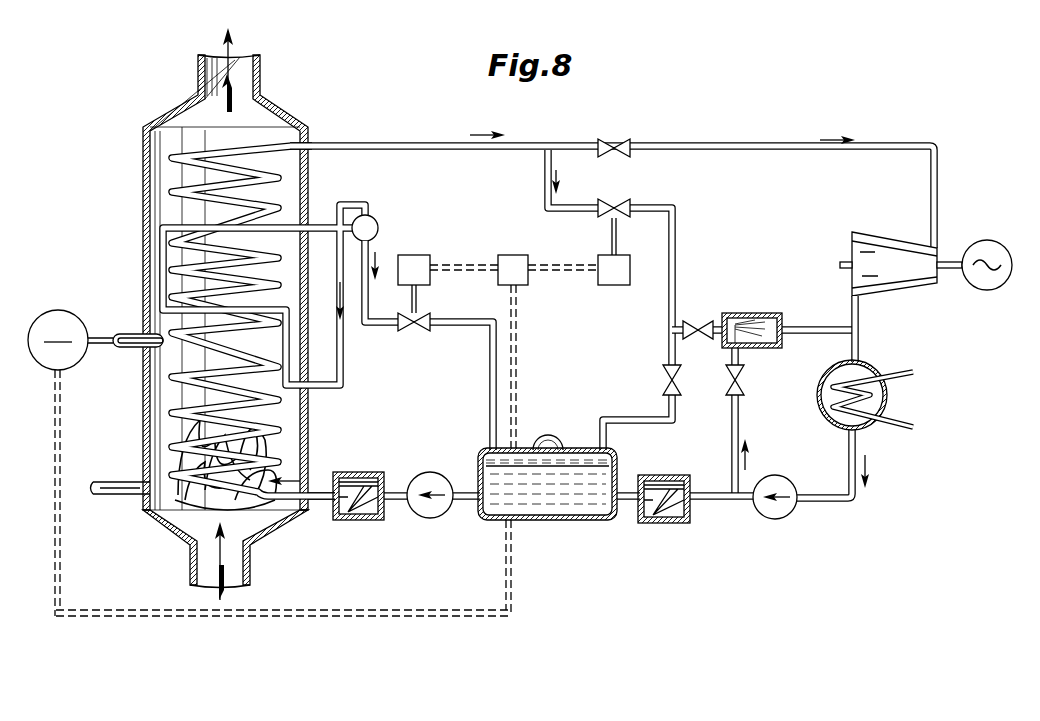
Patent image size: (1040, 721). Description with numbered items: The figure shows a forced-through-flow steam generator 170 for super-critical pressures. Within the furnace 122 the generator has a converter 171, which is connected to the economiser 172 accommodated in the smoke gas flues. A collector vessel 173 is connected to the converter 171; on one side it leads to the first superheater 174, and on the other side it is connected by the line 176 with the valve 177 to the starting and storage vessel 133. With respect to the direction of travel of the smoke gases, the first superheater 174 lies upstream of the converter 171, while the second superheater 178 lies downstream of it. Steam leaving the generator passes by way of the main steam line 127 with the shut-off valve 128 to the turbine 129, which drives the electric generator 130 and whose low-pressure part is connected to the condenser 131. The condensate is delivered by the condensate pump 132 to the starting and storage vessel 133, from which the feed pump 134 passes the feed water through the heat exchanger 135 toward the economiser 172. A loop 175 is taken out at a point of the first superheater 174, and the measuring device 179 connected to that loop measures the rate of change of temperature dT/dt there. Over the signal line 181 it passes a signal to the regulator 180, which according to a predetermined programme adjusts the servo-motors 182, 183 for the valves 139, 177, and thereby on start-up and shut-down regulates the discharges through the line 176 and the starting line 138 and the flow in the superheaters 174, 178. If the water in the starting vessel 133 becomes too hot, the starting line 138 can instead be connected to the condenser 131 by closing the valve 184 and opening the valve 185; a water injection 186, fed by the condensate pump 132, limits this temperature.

The furnace 122 is at (155, 512).
The main steam line 127 is at (432, 140).
The shut-off valve 128 is at (612, 140).
The turbine 129 is at (885, 240).
The electric generator 130 is at (990, 240).
The condenser 131 is at (890, 395).
The condensate pump 132 is at (785, 520).
The starting and storage vessel 133 is at (560, 520).
The feed pump 134 is at (432, 518).
The heat exchanger 135 is at (360, 520).
The starting line 138 is at (545, 175).
The valve 139 is at (612, 205).
The forced-through-flow steam generator 170 is at (140, 400).
The converter 171 is at (172, 272).
The economiser 172 is at (285, 438).
The collector vessel 173 is at (378, 222).
The first superheater 174 is at (172, 377).
The loop 175 is at (113, 333).
The line 176 is at (365, 305).
The valve 177 is at (414, 330).
The second superheater 178 is at (298, 185).
The measuring device 179 is at (58, 310).
The regulator 180 is at (505, 255).
The signal line 181 is at (517, 390).
The servo-motor 182 is at (614, 285).
The servo-motor 183 is at (410, 255).
The valve 184 is at (663, 380).
The valve 185 is at (695, 320).
The water injection 186 is at (745, 355).